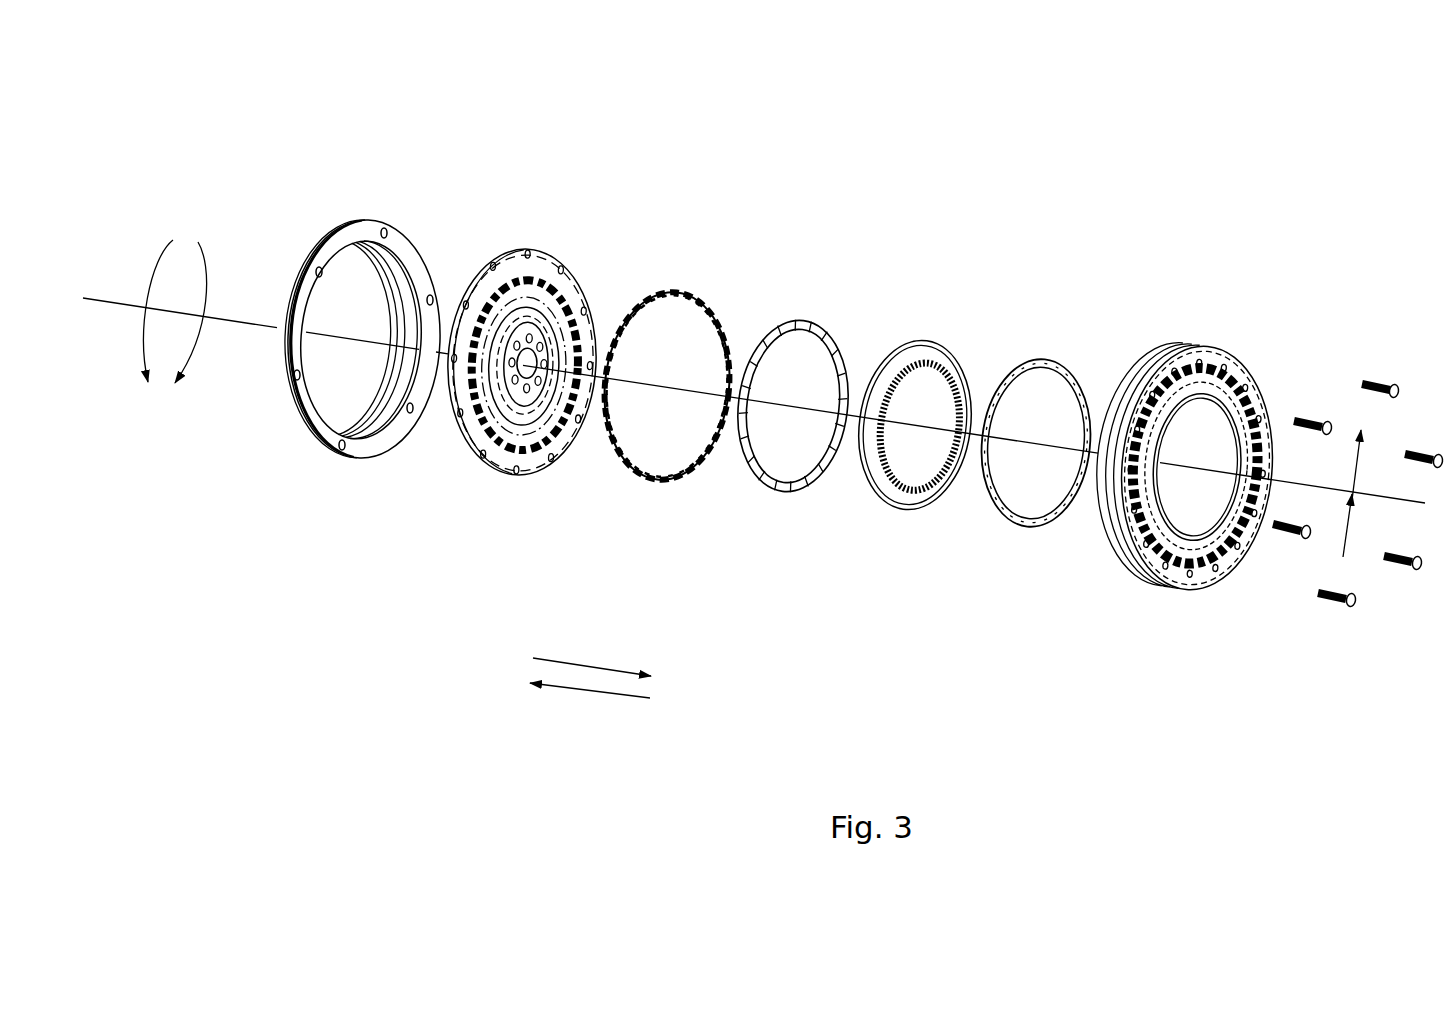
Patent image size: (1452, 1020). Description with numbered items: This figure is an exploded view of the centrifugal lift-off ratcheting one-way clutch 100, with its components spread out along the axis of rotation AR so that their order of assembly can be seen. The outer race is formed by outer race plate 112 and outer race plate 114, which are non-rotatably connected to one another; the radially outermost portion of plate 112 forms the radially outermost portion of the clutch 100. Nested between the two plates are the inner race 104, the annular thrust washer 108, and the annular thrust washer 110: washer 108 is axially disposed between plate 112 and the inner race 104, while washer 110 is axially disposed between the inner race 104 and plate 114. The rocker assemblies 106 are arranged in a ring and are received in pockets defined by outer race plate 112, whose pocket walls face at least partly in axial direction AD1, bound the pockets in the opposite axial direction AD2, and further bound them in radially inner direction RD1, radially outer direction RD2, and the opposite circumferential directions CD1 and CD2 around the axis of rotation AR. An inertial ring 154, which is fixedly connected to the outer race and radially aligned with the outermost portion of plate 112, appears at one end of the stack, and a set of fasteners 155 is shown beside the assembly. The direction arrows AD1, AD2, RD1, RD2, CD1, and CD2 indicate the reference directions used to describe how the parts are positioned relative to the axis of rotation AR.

The centrifugal lift-off ratcheting one-way clutch 100 is at (1154, 106).
The inner race 104 is at (923, 338).
The rocker assembly 106 is at (693, 293).
The annular thrust washer 108 is at (802, 318).
The annular thrust washer 110 is at (1042, 360).
The outer race plate 112 is at (1190, 342).
The outer race plate 114 is at (533, 250).
The inertial ring 154 is at (375, 222).
The fastener 155 is at (1293, 420).
The circumferential direction CD1 is at (187, 383).
The circumferential direction CD2 is at (156, 268).
The axial direction AD1 is at (590, 690).
The axial direction AD2 is at (592, 663).
The radially inner direction RD1 is at (1353, 512).
The radially outer direction RD2 is at (1358, 472).
The axis of rotation AR is at (1327, 493).